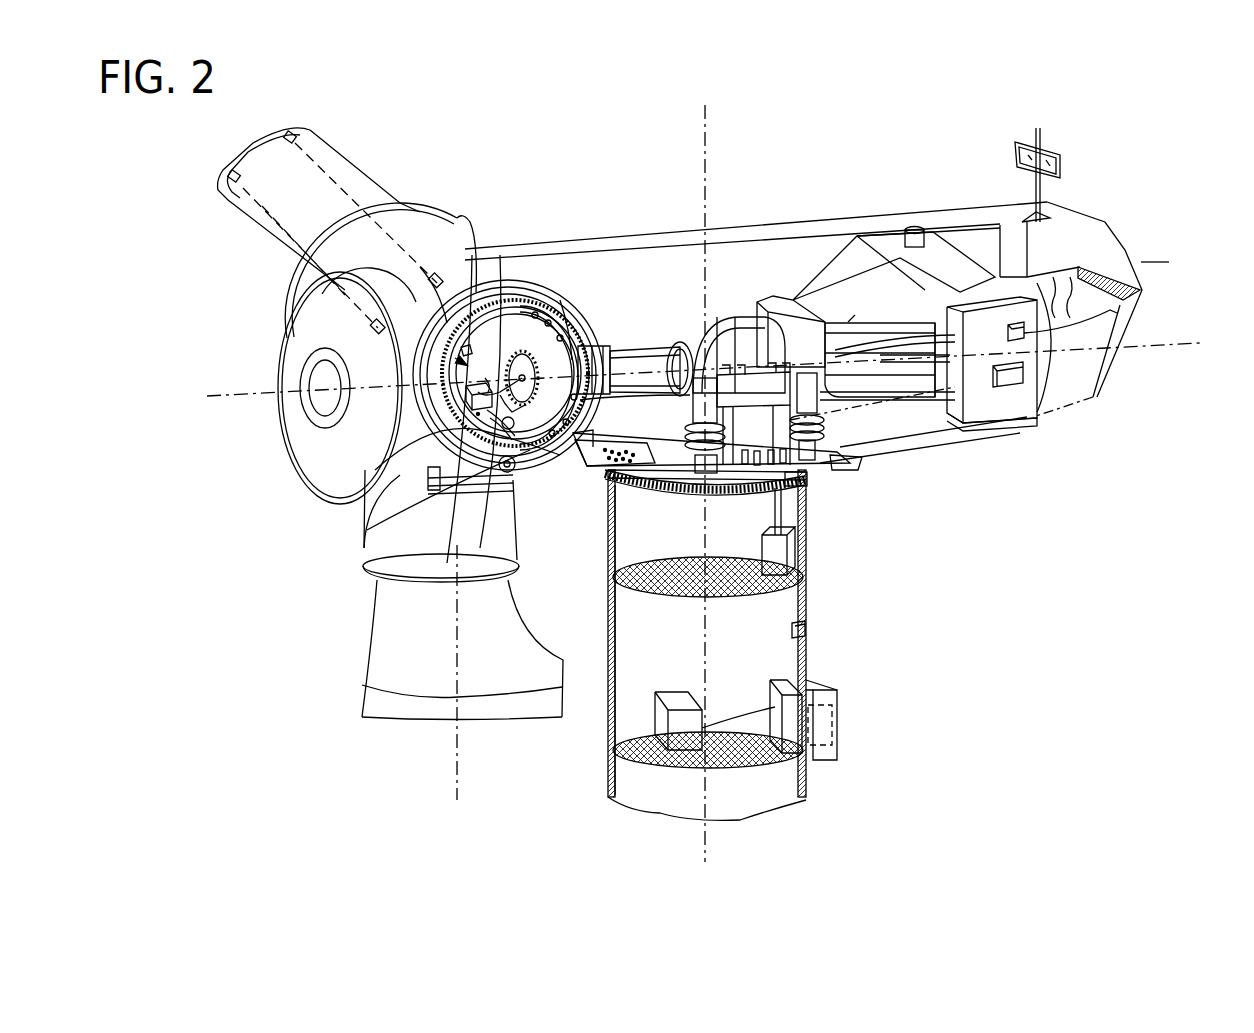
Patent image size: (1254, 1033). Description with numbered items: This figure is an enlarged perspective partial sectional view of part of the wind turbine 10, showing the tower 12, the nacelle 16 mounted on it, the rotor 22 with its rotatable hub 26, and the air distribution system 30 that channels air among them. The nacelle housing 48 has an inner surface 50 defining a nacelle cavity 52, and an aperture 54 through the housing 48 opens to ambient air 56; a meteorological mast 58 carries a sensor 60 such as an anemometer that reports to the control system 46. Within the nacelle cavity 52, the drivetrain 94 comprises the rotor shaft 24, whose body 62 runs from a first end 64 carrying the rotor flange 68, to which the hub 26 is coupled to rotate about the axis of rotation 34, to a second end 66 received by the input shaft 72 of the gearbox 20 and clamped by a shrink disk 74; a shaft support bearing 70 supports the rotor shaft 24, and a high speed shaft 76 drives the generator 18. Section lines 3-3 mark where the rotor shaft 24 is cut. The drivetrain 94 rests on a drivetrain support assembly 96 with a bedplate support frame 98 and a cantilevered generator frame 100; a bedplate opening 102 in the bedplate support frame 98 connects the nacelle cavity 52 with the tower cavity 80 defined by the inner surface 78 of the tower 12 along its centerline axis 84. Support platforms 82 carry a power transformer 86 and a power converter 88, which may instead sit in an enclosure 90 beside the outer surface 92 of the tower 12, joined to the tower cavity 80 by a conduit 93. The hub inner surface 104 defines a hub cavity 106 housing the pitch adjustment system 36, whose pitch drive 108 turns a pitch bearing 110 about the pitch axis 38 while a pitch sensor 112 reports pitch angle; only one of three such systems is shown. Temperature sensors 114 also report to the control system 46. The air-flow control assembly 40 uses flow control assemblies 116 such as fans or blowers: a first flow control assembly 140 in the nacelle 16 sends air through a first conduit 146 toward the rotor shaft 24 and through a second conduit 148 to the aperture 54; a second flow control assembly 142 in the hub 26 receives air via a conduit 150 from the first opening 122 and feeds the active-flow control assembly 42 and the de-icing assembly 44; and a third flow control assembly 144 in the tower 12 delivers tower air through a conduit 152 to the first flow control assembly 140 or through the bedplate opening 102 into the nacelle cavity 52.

The section line 3 is at (876, 302).
The wind turbine 10 is at (740, 96).
The tower 12 is at (884, 630).
The nacelle 16 is at (874, 174).
The generator 18 is at (966, 268).
The gearbox 20 is at (768, 270).
The rotor 22 is at (270, 312).
The rotor shaft 24 is at (647, 325).
The hub 26 is at (518, 270).
The air distribution system 30 is at (843, 538).
The axis of rotation 34 is at (215, 404).
The pitch adjustment system 36 is at (502, 532).
The pitch axis 38 is at (455, 762).
The air-flow control assembly 40 is at (1030, 470).
The active-flow control assembly 42 is at (332, 151).
The de-icing assembly 44 is at (240, 218).
The control system 46 is at (1052, 392).
The housing 48 is at (898, 214).
The inner surface 50 is at (840, 230).
The nacelle cavity 52 is at (702, 248).
The aperture 54 is at (1115, 320).
The ambient air 56 is at (1131, 316).
The meteorological mast 58 is at (1062, 126).
The sensor 60 is at (1062, 160).
The body 62 is at (642, 366).
The first end 64 is at (605, 335).
The second end 66 is at (684, 340).
The rotor flange 68 is at (518, 322).
The shaft support bearing 70 is at (592, 405).
The input shaft 72 is at (682, 388).
The shrink disk 74 is at (718, 340).
The high speed shaft 76 is at (827, 323).
The inner surface 78 is at (610, 655).
The tower cavity 80 is at (633, 698).
The support platform 82 is at (640, 590).
The centerline axis 84 is at (707, 150).
The power transformer 86 is at (672, 694).
The power converter 88 is at (778, 681).
The enclosure 90 is at (840, 692).
The outer surface 92 is at (806, 610).
The conduit 93 is at (836, 728).
The drivetrain 94 is at (790, 260).
The drivetrain support assembly 96 is at (860, 474).
The bedplate support frame 98 is at (578, 452).
The generator frame 100 is at (948, 440).
The bedplate opening 102 is at (627, 501).
The inner surface 104 is at (490, 383).
The hub cavity 106 is at (456, 369).
The pitch drive 108 is at (400, 576).
The pitch bearing 110 is at (560, 300).
The pitch sensor 112 is at (400, 506).
The temperature sensor 114 is at (466, 346).
The flow control assembly 116 is at (1012, 402).
The first opening 122 is at (540, 425).
The first flow control assembly 140 is at (1035, 395).
The second flow control assembly 142 is at (400, 442).
The third flow control assembly 144 is at (795, 560).
The first conduit 146 is at (903, 347).
The second conduit 148 is at (1128, 296).
The conduit 150 is at (512, 300).
The conduit 152 is at (783, 500).